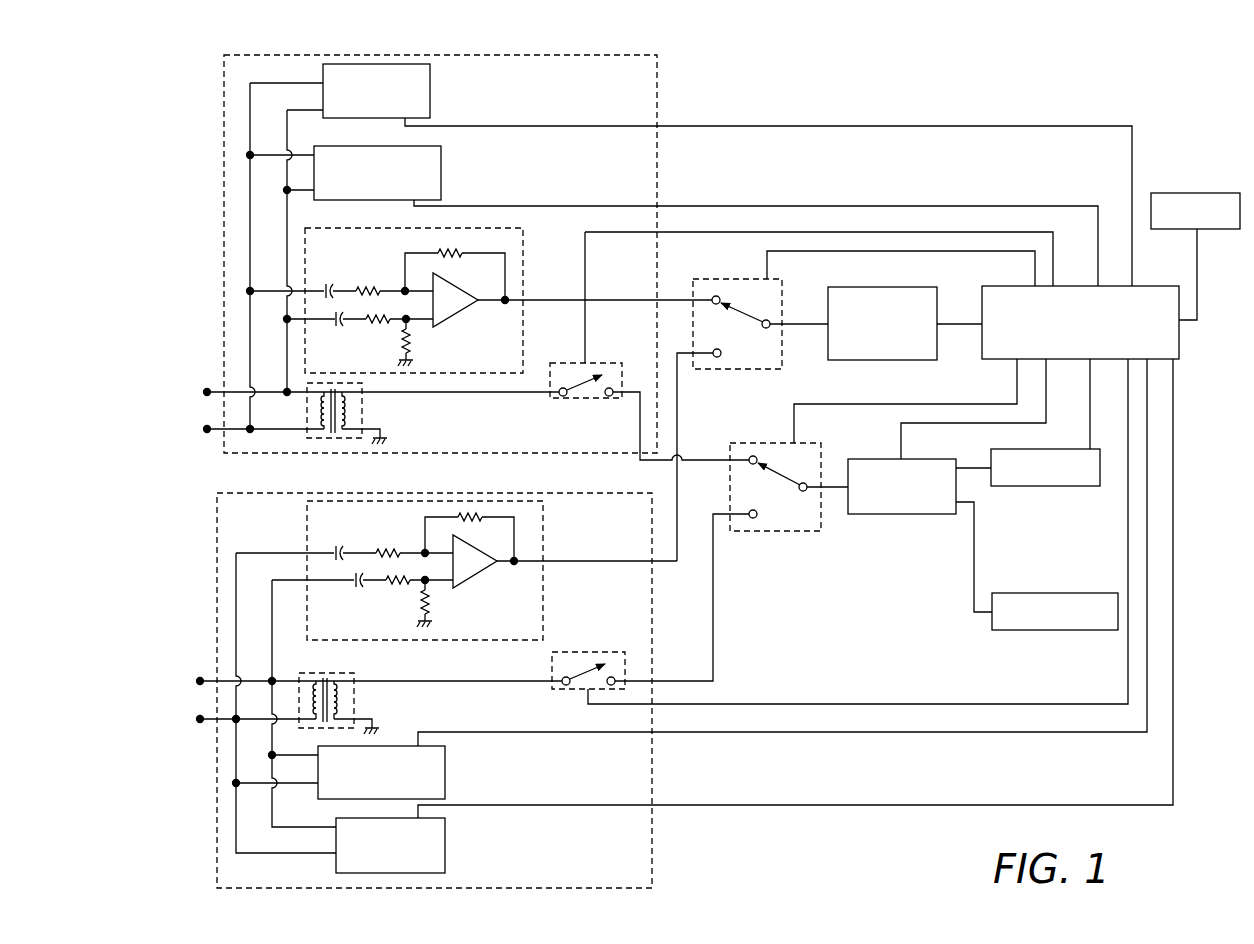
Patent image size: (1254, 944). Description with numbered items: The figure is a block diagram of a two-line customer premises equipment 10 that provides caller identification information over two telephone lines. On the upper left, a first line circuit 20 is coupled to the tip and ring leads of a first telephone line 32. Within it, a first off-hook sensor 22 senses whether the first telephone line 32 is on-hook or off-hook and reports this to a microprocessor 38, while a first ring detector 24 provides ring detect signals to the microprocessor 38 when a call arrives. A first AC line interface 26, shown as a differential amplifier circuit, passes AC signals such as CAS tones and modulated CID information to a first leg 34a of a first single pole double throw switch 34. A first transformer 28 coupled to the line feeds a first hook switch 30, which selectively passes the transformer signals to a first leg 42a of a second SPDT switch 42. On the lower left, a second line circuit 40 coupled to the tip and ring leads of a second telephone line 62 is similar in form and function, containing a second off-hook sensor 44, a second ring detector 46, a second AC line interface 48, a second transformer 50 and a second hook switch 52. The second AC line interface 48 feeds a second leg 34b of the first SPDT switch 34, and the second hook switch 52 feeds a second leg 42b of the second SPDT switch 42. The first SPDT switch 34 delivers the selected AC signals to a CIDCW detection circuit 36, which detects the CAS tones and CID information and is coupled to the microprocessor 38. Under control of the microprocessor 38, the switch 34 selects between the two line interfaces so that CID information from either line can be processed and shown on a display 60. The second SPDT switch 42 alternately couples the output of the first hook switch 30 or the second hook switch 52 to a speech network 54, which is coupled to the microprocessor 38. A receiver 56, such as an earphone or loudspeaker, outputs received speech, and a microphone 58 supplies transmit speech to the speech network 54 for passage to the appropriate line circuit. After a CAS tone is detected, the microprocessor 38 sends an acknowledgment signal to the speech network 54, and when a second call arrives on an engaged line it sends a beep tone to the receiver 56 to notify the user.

The customer premises equipment 10 is at (1007, 82).
The Line-1 circuit 20 is at (657, 100).
The first off-hook sensor 22 is at (432, 70).
The first ring detector 24 is at (443, 152).
The first AC line interface 26 is at (523, 280).
The first transformer 28 is at (362, 400).
The first hook switch 30 is at (594, 400).
The first telephone line 32 is at (194, 420).
The first single pole double throw switch 34 is at (848, 406).
The first leg of first SPDT switch 34a is at (702, 296).
The second leg of first SPDT switch 34b is at (712, 360).
The CIDCW detection circuit 36 is at (912, 362).
The microprocessor 38 is at (1183, 357).
The Line-2 circuit 40 is at (655, 835).
The second single pole double throw switch 42 is at (731, 554).
The first leg of second SPDT switch 42a is at (740, 456).
The second leg of second SPDT switch 42b is at (748, 521).
The second off-hook sensor 44 is at (447, 833).
The second ring detector 46 is at (447, 752).
The second AC line interface 48 is at (543, 540).
The second transformer 50 is at (355, 690).
The second hook switch 52 is at (585, 650).
The speech network 54 is at (865, 515).
The receiver 56 is at (1010, 487).
The microphone 58 is at (1020, 631).
The display 60 is at (1170, 191).
The second telephone line 62 is at (194, 709).